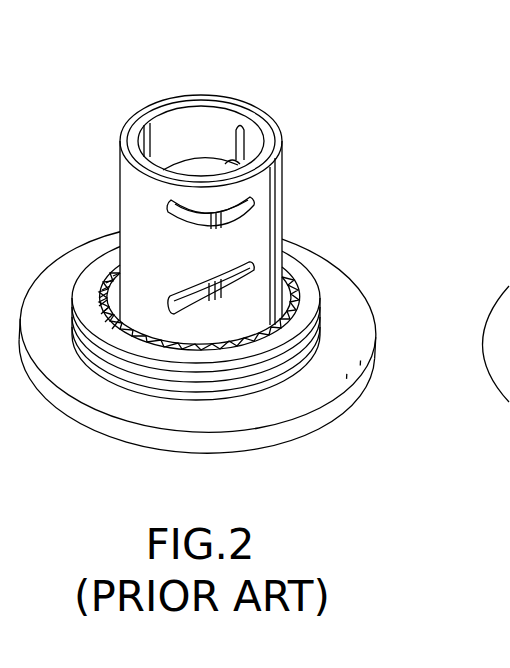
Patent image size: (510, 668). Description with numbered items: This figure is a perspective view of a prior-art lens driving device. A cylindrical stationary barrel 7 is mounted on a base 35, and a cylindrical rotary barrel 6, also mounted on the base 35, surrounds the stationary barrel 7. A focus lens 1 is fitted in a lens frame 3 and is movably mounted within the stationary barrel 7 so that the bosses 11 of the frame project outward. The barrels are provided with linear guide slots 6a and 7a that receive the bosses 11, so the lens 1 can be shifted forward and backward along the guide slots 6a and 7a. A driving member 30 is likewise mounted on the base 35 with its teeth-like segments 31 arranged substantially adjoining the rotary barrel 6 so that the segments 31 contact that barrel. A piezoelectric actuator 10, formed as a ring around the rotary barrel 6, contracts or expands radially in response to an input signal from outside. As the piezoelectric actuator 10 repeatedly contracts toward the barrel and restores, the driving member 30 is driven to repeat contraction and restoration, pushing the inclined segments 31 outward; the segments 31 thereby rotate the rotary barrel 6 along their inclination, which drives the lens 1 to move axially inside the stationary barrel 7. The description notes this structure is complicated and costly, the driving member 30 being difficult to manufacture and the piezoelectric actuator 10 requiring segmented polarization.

The focus lens 1 is at (196, 170).
The lens frame 3 is at (228, 160).
The linear guide slot 7a is at (242, 128).
The cylindrical rotary barrel 6 is at (265, 120).
The cylindrical stationary barrel 7 is at (271, 141).
The bosses 11 is at (256, 203).
The teeth-like segments 31 is at (288, 276).
The piezoelectric actuator 10 is at (306, 278).
The base 35 is at (356, 316).
The driving member 30 is at (133, 331).
The linear guide slot 6a is at (236, 288).